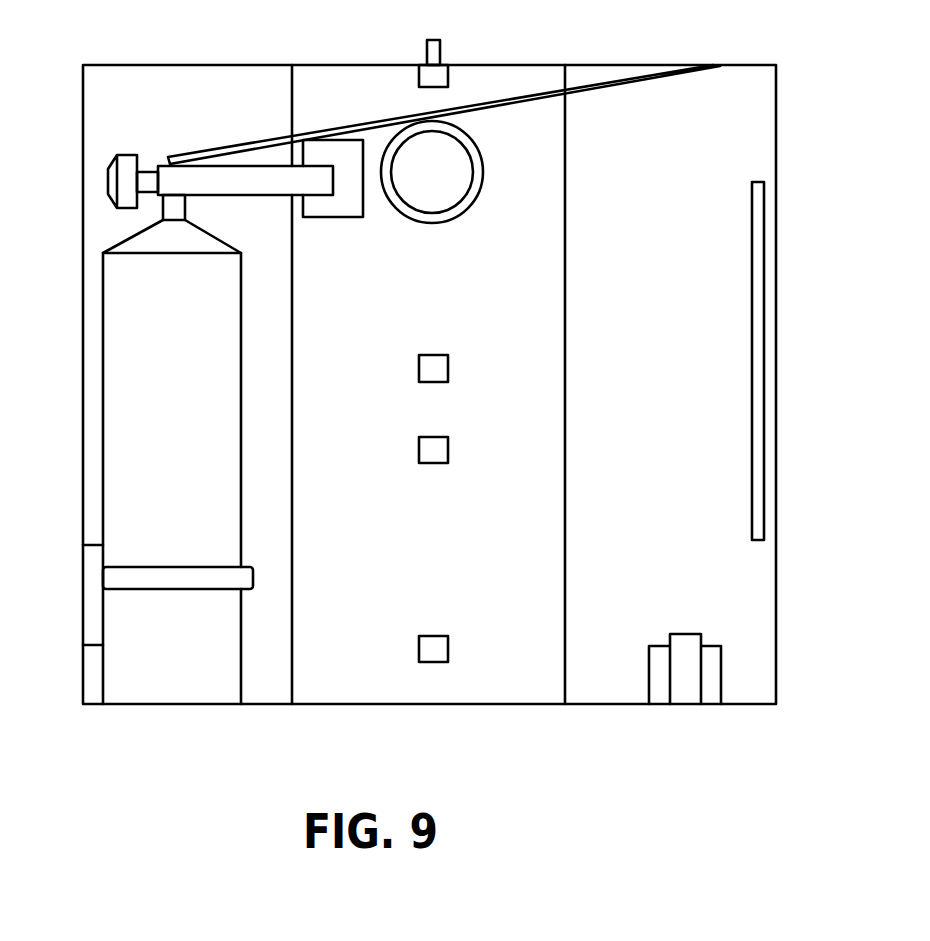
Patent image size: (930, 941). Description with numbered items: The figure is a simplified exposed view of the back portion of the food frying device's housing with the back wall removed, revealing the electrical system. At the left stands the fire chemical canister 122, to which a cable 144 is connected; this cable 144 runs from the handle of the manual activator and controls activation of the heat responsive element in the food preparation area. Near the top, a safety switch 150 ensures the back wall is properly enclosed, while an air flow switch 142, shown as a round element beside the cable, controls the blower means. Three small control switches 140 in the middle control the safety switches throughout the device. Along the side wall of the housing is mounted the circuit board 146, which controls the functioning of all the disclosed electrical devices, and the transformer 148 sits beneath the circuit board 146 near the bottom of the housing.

The fire chemical canister 122 is at (150, 332).
The control switches 140 is at (433, 372).
The air flow switch 142 is at (428, 170).
The cable 144 is at (630, 78).
The circuit board 146 is at (760, 307).
The transformer 148 is at (710, 678).
The safety switch 150 is at (430, 52).